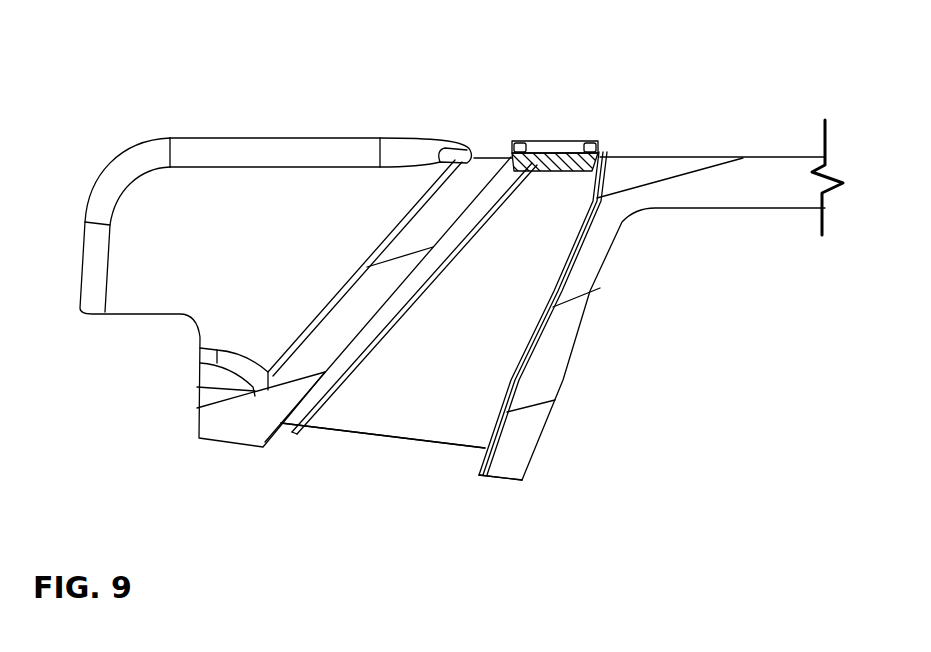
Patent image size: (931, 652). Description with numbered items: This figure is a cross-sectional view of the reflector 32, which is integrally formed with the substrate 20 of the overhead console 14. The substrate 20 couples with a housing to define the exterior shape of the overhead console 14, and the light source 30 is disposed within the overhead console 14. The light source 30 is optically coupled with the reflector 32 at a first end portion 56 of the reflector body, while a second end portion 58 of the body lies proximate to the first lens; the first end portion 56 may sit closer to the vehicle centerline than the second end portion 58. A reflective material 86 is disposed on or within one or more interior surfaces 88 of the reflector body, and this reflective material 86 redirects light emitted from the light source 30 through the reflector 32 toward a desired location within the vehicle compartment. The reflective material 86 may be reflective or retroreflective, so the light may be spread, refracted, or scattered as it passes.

The overhead console 14 is at (331, 94).
The substrate 20 is at (218, 137).
The light source 30 is at (557, 141).
The reflector 32 is at (450, 420).
The first end portion 56 is at (536, 176).
The second end portion 58 is at (364, 440).
The reflective material 86 is at (328, 390).
The interior surfaces 88 is at (496, 210).